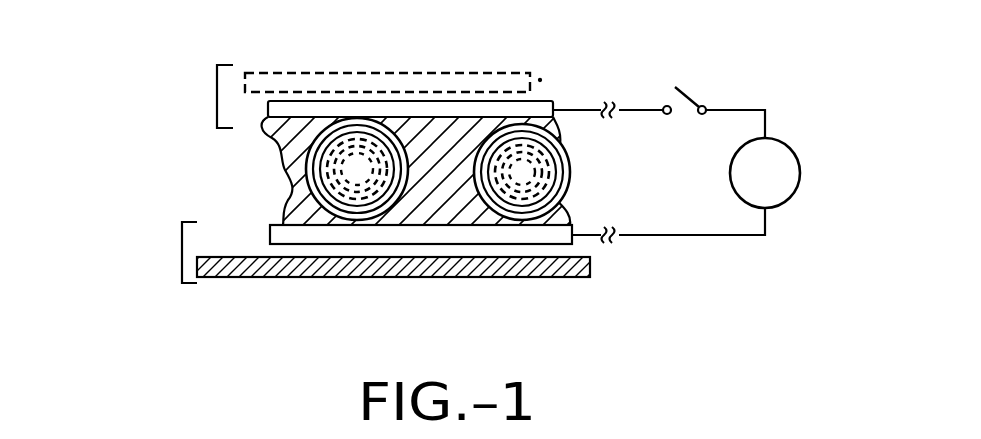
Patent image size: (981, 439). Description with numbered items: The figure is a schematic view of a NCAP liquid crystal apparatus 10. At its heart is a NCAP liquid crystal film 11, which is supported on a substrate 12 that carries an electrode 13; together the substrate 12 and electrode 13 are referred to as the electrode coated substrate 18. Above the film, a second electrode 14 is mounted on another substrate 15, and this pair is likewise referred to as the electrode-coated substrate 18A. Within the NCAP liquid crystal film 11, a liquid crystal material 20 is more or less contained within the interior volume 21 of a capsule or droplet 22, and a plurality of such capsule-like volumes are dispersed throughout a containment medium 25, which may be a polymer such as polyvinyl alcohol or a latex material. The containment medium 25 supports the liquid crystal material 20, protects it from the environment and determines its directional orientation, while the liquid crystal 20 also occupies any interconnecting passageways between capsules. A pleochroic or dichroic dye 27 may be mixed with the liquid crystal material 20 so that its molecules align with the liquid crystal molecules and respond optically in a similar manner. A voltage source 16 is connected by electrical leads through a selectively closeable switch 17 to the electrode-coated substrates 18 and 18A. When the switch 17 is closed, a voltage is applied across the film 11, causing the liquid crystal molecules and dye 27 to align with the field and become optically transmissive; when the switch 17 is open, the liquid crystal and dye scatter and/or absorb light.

The NCAP liquid crystal apparatus 10 is at (146, 167).
The NCAP liquid crystal film 11 is at (383, 121).
The substrate 12 is at (257, 277).
The electrode 13 is at (270, 233).
The second electrode 14 is at (268, 121).
The substrate 15 is at (313, 73).
The voltage source 16 is at (797, 188).
The switch 17 is at (687, 92).
The electrode coated substrate 18 is at (182, 250).
The electrode-coated substrate 18A is at (217, 113).
The liquid crystal material 20 is at (355, 237).
The interior volume 21 is at (416, 192).
The capsule 22 is at (415, 191).
The containment medium 25 is at (437, 150).
The pleochroic or dichroic dye 27 is at (329, 190).